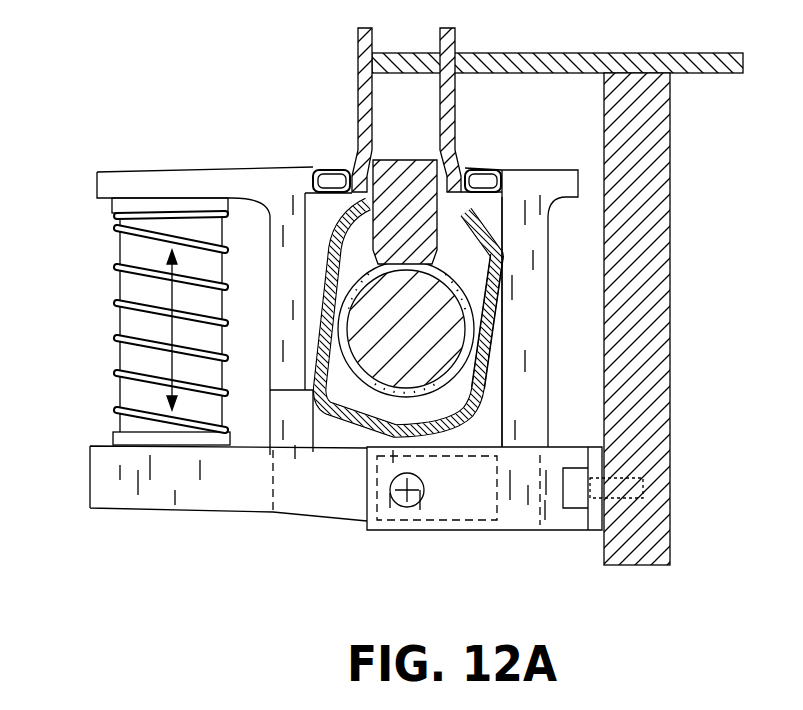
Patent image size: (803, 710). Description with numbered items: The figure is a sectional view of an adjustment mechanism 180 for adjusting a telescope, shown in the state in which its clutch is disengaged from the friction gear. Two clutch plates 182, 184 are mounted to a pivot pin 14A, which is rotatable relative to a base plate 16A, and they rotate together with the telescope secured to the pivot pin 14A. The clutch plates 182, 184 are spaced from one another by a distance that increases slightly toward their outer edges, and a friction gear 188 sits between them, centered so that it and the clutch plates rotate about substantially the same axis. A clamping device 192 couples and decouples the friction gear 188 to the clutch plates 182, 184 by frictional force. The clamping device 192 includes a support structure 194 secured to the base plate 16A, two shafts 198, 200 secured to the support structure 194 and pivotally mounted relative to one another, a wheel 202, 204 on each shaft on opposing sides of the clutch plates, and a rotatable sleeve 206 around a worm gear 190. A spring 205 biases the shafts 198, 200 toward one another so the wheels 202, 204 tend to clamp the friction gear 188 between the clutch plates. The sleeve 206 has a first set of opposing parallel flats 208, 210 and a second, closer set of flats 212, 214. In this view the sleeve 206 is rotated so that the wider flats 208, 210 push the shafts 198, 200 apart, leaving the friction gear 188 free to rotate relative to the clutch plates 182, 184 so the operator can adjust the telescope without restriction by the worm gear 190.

The pivot pin 14A is at (521, 53).
The base plate 16A is at (670, 430).
The adjustment mechanism 180 is at (240, 118).
The clutch plate 182 is at (455, 102).
The clutch plate 184 is at (358, 106).
The friction gear 188 is at (410, 158).
The worm gear 190 is at (449, 286).
The clamping device 192 is at (592, 323).
The support structure 194 is at (445, 497).
The shaft 198 is at (503, 400).
The shaft 200 is at (270, 318).
The wheel 202 is at (467, 172).
The wheel 204 is at (350, 176).
The spring 205 is at (112, 312).
The rotatable sleeve 206 is at (347, 450).
The flat 208 is at (503, 262).
The flat 210 is at (270, 387).
The flat 212 is at (486, 398).
The flat 214 is at (335, 238).